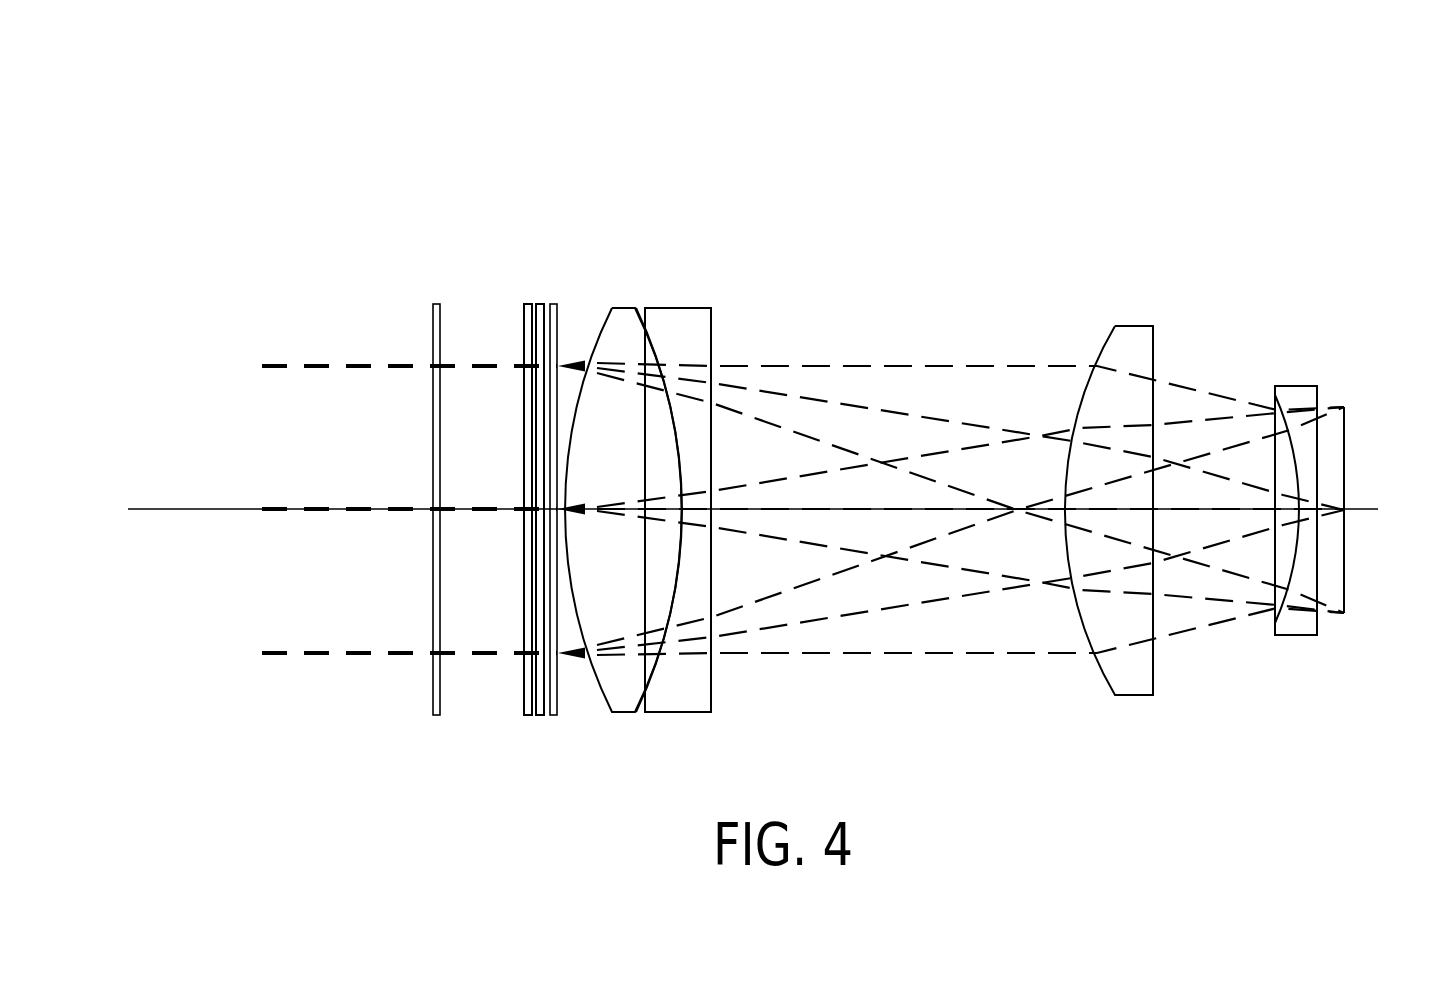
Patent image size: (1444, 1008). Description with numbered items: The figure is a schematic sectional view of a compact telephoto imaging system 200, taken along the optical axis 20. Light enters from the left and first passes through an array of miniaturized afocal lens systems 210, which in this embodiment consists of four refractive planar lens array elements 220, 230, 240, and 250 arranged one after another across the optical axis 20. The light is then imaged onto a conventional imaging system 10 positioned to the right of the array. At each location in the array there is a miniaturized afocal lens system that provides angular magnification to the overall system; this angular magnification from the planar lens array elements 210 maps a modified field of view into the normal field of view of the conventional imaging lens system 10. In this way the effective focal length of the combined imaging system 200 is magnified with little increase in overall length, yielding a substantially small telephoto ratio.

The compact telephoto imaging system 200 is at (272, 125).
The array of miniaturized afocal lens systems 210 is at (580, 305).
The conventional imaging system 10 is at (1378, 305).
The optical axis 20 is at (158, 507).
The first refractive planar lens array element 220 is at (436, 716).
The second refractive planar lens array element 230 is at (527, 716).
The third refractive planar lens array element 240 is at (539, 716).
The fourth refractive planar lens array element 250 is at (554, 716).